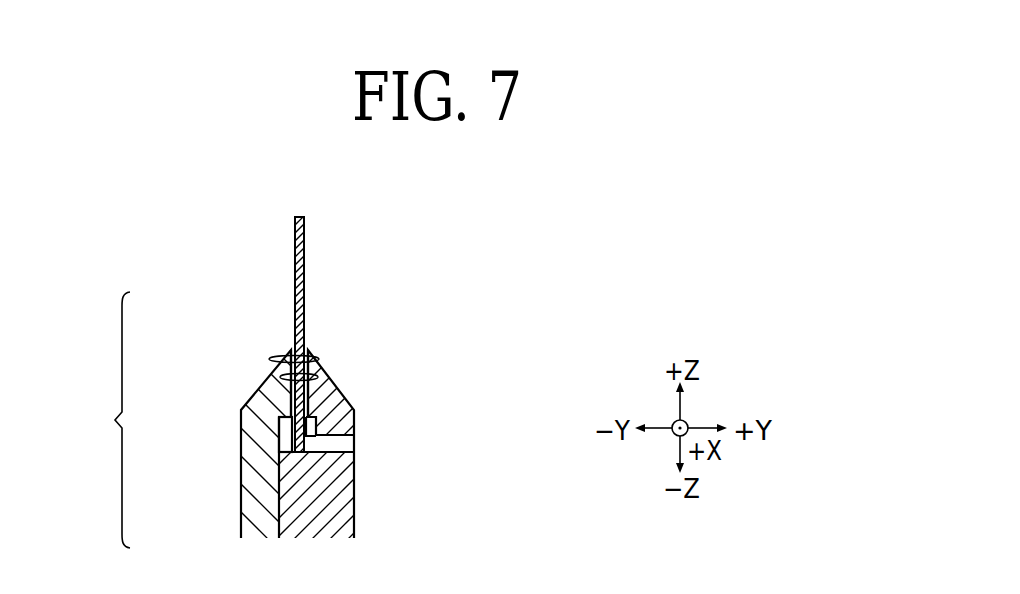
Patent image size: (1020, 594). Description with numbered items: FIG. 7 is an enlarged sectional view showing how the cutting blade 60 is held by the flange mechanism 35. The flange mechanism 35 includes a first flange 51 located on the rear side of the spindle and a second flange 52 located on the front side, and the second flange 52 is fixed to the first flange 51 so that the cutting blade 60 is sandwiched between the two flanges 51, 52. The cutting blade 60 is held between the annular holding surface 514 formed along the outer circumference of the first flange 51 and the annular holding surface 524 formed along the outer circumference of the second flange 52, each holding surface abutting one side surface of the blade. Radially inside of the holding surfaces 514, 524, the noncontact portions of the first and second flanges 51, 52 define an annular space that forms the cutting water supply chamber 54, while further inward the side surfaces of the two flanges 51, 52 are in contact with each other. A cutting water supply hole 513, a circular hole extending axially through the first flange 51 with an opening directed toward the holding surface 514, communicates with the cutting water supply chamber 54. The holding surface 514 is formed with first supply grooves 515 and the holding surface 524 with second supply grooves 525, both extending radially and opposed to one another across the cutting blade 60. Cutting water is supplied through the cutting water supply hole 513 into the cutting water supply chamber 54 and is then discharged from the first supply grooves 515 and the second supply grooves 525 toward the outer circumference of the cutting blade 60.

The flange mechanism 35 is at (105, 437).
The first flange 51 is at (353, 404).
The second flange 52 is at (249, 400).
The cutting water supply chamber 54 is at (283, 433).
The cutting blade 60 is at (303, 231).
The cutting water supply hole 513 is at (343, 443).
The holding surface 514 is at (317, 357).
The first supply groove 515 is at (309, 347).
The holding surface 524 is at (274, 377).
The second supply groove 525 is at (289, 346).